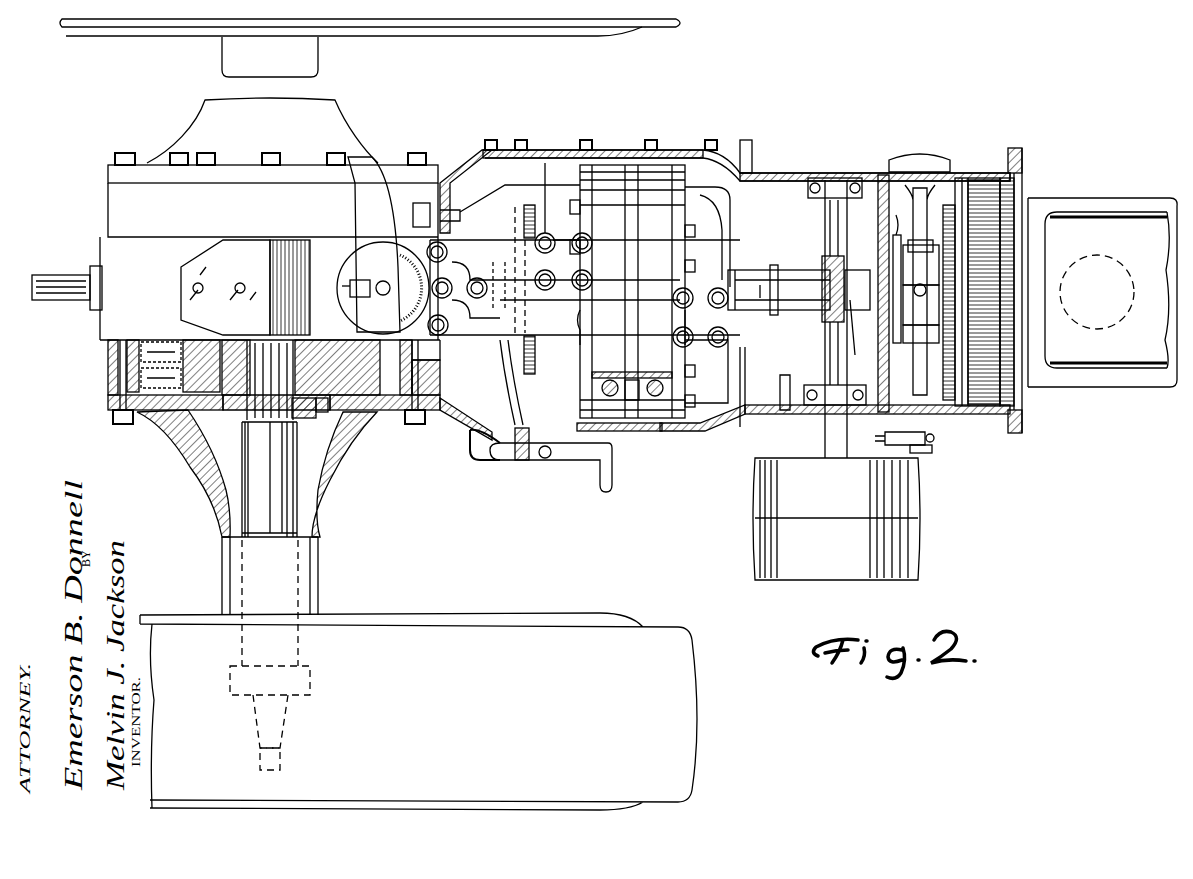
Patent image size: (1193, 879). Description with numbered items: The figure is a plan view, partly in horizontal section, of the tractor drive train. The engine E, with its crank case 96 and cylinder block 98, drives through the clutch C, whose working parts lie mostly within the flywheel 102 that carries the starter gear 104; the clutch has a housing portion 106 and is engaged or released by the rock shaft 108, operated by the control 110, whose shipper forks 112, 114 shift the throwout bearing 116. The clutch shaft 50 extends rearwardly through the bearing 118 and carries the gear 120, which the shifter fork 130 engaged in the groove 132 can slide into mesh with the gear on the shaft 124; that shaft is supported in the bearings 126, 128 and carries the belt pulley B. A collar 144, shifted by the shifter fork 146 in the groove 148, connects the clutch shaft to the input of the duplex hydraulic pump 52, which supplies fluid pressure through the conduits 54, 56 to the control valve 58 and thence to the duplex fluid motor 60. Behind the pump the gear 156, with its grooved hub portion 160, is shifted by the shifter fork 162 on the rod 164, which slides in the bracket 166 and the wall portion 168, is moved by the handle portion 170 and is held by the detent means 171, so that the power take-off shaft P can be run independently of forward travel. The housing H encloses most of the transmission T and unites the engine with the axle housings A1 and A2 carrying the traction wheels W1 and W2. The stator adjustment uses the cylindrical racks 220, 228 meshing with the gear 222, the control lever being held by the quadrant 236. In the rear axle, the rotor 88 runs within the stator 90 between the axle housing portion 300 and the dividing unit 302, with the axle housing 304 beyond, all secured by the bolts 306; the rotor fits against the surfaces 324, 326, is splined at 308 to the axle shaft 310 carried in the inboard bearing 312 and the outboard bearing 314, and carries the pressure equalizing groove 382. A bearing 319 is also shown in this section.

The traction wheel W1 is at (607, 40).
The axle housing A1 is at (325, 58).
The axle housing 304 is at (201, 120).
The duplex fluid motor 60 is at (106, 190).
The power take-off shaft P is at (78, 270).
The dividing port carrying casting 302 is at (118, 343).
The control valve 58 is at (343, 262).
The conduit 56 is at (482, 318).
The conduit 54 is at (490, 250).
The grooved hub portion 160 is at (515, 210).
The gear 156 is at (530, 374).
The shifter fork 162 is at (506, 378).
The housing H is at (775, 160).
The duplex hydraulic pump 52 is at (662, 165).
The quadrant 236 is at (612, 372).
The cylindrical rack element 220 is at (612, 396).
The cylindrical rack 228 is at (660, 394).
The gear 222 is at (640, 400).
The collar or clutch element 144 is at (757, 270).
The groove 148 is at (780, 310).
The shifter fork 146 is at (778, 330).
The groove 132 is at (810, 270).
The shifter fork 130 is at (832, 222).
The shaft 124 is at (825, 343).
The bearing 126 is at (806, 190).
The bearing 128 is at (812, 385).
The spiral gear 120 is at (850, 300).
The bearing 118 is at (875, 262).
The clutch shaft 50 is at (905, 240).
The shipper fork 112 is at (925, 245).
The throwout bearing 116 is at (930, 270).
The shipper fork 114 is at (930, 345).
The housing portion 106 is at (950, 410).
The flywheel 102 is at (985, 410).
The starter gear 104 is at (1027, 400).
The clutch C is at (945, 400).
The control 110 is at (895, 442).
The rock shaft 108 is at (925, 453).
The engine E is at (1095, 192).
The cylinder block 98 is at (1080, 365).
The crank case 96 is at (1126, 375).
The belt pulley B is at (925, 552).
The bolts 306 is at (122, 375).
The bearing 319 is at (190, 395).
The spline 308 is at (268, 400).
The pressure equalizing groove 382 is at (330, 410).
The complementary surface 324 is at (345, 410).
The axle housing portion 300 is at (192, 450).
The inboard bearing 312 is at (212, 480).
The axle shaft 310 is at (308, 492).
The surface 326 is at (345, 430).
The rotor 88 is at (392, 400).
The stator 90 is at (435, 395).
The axle housing A2 is at (330, 565).
The transmission T is at (495, 470).
The rod 164 is at (568, 440).
The bracket 166 is at (555, 460).
The handle portion 170 is at (612, 465).
The wall portion 168 is at (606, 492).
The detent means 171 is at (538, 466).
The traction wheel W2 is at (705, 752).
The outboard bearing 314 is at (312, 675).